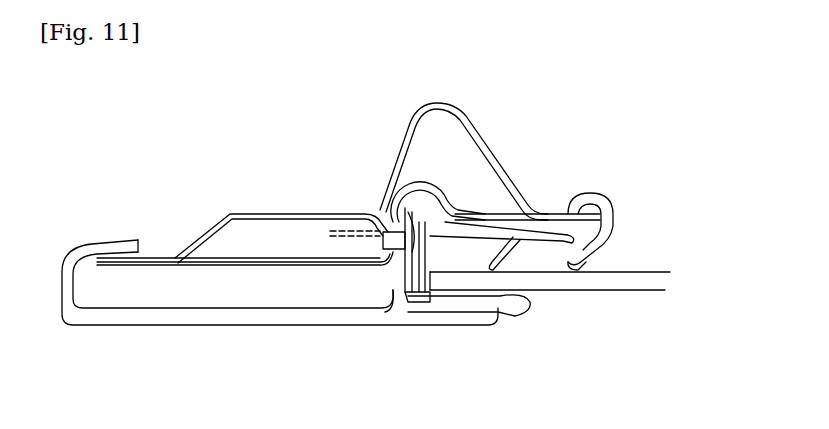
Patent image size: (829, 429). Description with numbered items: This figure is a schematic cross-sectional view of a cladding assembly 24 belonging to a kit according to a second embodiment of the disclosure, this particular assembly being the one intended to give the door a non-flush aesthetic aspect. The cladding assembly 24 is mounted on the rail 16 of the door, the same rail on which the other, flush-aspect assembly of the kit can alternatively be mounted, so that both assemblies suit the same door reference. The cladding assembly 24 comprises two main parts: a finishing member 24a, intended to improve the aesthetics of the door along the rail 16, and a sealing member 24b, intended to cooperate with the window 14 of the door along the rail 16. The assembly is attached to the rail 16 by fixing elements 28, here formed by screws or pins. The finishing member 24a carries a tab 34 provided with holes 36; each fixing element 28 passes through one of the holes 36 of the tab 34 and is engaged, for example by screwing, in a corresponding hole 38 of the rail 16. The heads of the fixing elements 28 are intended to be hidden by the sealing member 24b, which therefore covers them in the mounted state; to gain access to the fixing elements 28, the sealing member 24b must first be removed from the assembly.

The window 14 is at (620, 285).
The rail 16 is at (506, 101).
The cladding assembly 24 is at (606, 154).
The finishing member 24a is at (325, 340).
The sealing member 24b is at (622, 194).
The fixing elements 28 is at (362, 241).
The tab 34 is at (385, 314).
The holes 36 is at (420, 183).
The holes 38 is at (374, 231).